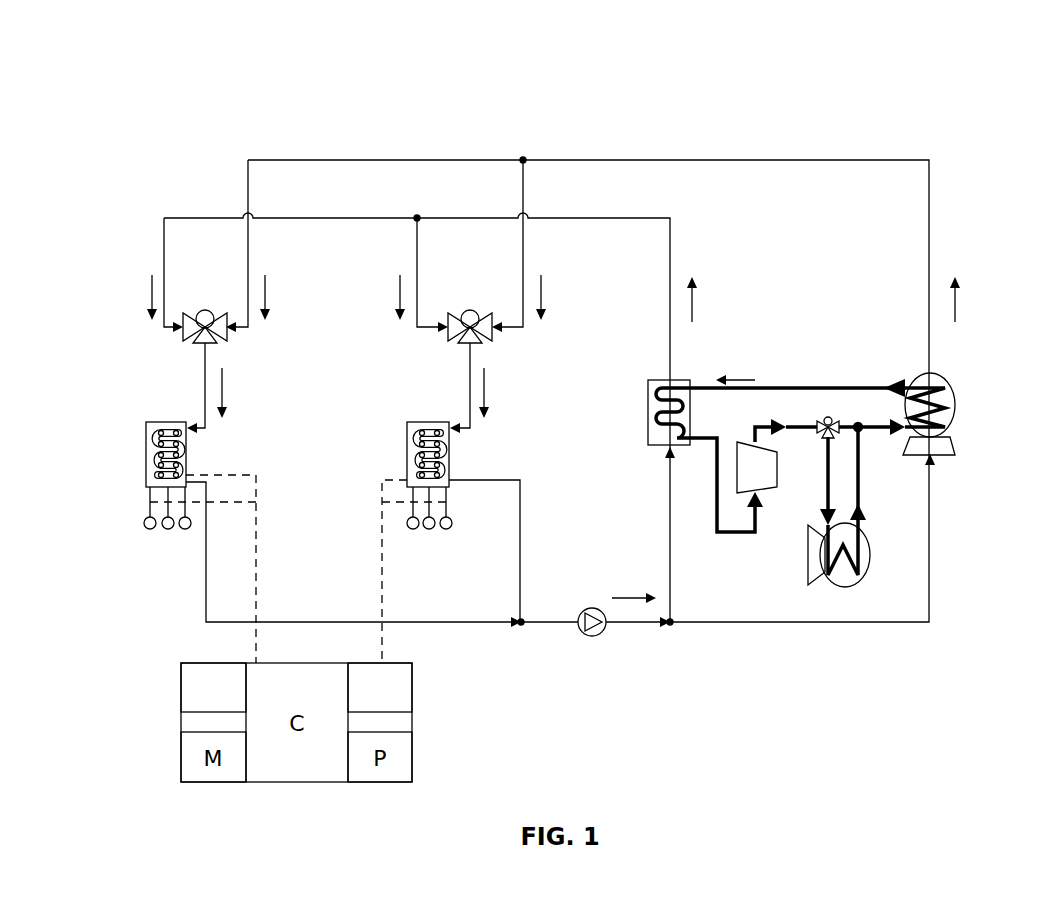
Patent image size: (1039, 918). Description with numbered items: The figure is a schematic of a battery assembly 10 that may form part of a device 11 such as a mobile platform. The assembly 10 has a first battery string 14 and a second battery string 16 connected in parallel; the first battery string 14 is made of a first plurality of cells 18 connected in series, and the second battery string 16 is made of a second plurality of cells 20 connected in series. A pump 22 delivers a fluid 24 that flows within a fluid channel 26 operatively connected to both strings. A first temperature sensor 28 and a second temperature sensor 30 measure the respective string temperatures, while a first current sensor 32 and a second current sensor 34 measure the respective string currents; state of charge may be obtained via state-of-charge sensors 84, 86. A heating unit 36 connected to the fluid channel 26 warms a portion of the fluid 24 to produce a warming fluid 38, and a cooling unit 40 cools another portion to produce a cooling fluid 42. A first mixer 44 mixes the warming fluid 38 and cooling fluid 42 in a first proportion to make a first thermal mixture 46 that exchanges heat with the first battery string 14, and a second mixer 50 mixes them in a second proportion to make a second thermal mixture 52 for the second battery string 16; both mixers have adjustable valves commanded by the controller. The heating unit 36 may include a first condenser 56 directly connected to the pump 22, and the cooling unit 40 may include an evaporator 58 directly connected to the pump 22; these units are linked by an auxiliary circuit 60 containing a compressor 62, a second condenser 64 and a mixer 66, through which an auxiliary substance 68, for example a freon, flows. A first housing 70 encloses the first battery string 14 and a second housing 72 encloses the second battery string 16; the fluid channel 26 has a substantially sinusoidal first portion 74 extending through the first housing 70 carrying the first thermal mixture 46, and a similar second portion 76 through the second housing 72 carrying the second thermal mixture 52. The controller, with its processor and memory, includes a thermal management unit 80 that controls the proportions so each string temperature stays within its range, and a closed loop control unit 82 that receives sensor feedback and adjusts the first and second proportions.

The battery assembly 10 is at (890, 99).
The device 11 is at (199, 99).
The first battery string 14 is at (108, 418).
The second battery string 16 is at (392, 411).
The first plurality of cells 18 is at (146, 467).
The second plurality of cells 20 is at (407, 467).
The pump 22 is at (588, 637).
The fluid 24 is at (630, 597).
The fluid channel 26 is at (564, 142).
The first temperature sensor 28 is at (148, 530).
The second temperature sensor 30 is at (411, 530).
The first current sensor 32 is at (167, 530).
The second current sensor 34 is at (431, 530).
The heating unit 36 is at (953, 354).
The warming fluid 38 is at (267, 292).
The cooling unit 40 is at (645, 374).
The cooling fluid 42 is at (150, 292).
The first mixer 44 is at (191, 338).
The first thermal mixture 46 is at (224, 392).
The second mixer 50 is at (486, 338).
The second thermal mixture 52 is at (486, 392).
The first condenser 56 is at (956, 405).
The evaporator 58 is at (647, 412).
The auxiliary circuit 60 is at (815, 387).
The compressor 62 is at (768, 488).
The second condenser 64 is at (871, 553).
The mixer 66 is at (832, 419).
The auxiliary substance 68 is at (736, 378).
The first housing 70 is at (160, 421).
The second housing 72 is at (428, 421).
The first portion 74 is at (187, 469).
The second portion 76 is at (449, 469).
The thermal management unit 80 is at (200, 702).
The closed loop control unit 82 is at (367, 702).
The first state-of-charge sensor 84 is at (191, 524).
The second state-of-charge sensor 86 is at (452, 523).